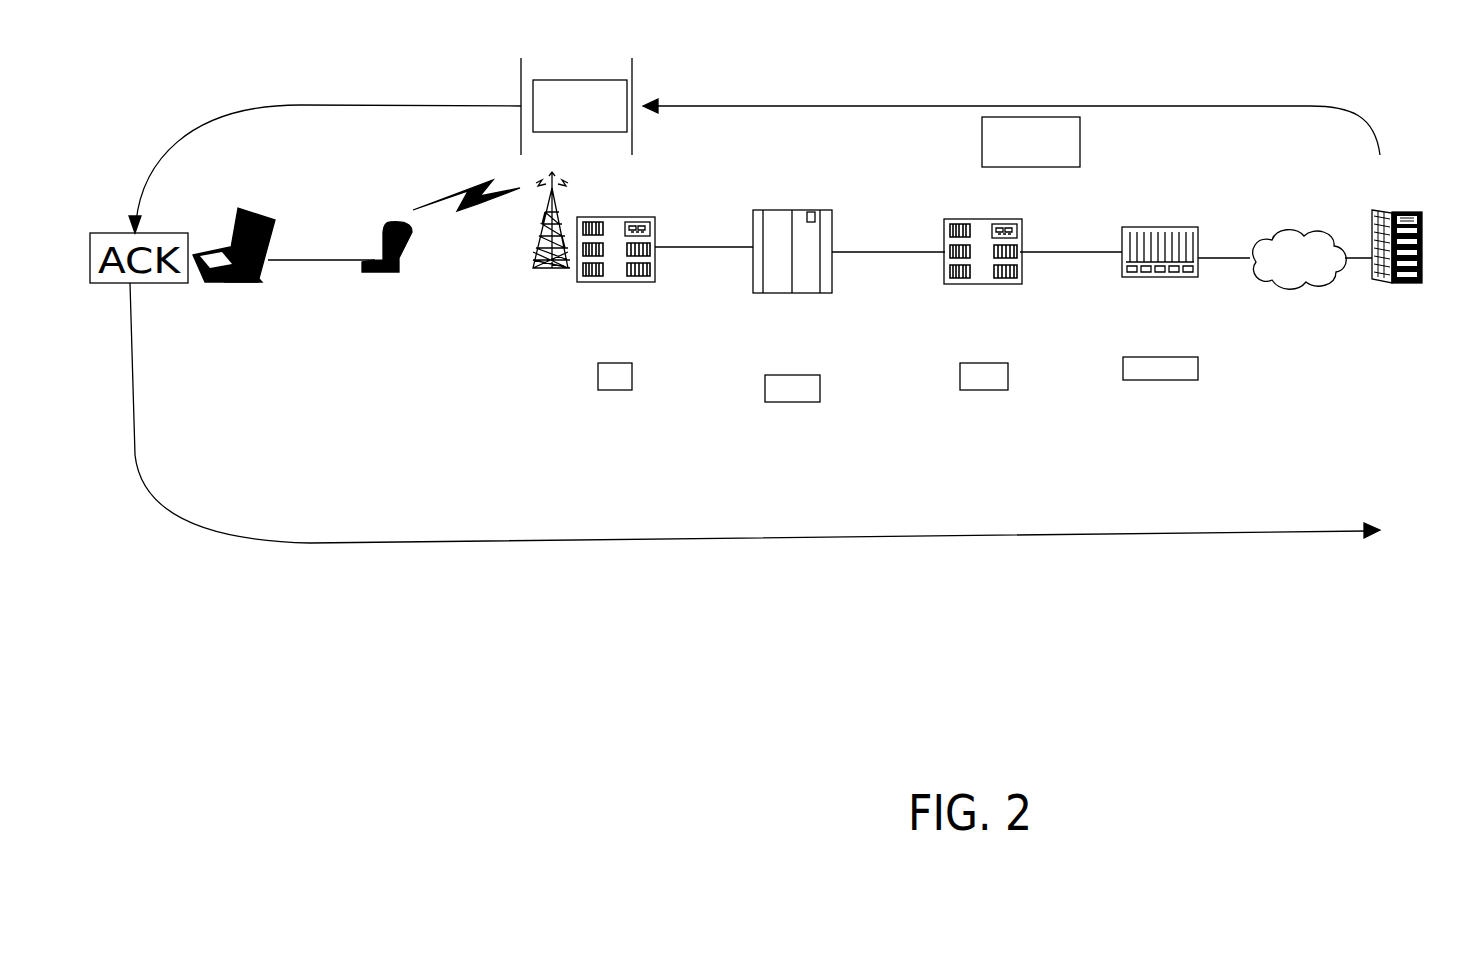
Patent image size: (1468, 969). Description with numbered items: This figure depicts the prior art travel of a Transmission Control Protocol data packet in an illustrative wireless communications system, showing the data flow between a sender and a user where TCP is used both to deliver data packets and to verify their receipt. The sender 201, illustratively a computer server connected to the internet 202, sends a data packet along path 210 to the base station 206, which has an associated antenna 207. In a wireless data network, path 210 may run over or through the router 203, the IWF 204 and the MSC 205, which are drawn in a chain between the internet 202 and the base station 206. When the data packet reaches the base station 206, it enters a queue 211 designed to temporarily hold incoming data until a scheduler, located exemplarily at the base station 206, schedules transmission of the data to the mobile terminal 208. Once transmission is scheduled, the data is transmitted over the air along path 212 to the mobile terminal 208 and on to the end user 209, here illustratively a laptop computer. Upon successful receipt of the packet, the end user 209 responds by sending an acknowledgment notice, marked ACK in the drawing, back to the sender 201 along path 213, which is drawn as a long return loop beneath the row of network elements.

The sender 201 is at (1402, 282).
The internet 202 is at (1332, 278).
The router 203 is at (1183, 280).
The IWF 204 is at (1027, 280).
The MSC 205 is at (833, 280).
The base station 206 is at (638, 283).
The antenna 207 is at (540, 283).
The mobile terminal 208 is at (383, 283).
The end user 209 is at (225, 295).
The path 210 is at (1075, 97).
The queue 211 is at (553, 73).
The path 212 is at (310, 87).
The path 213 is at (395, 560).